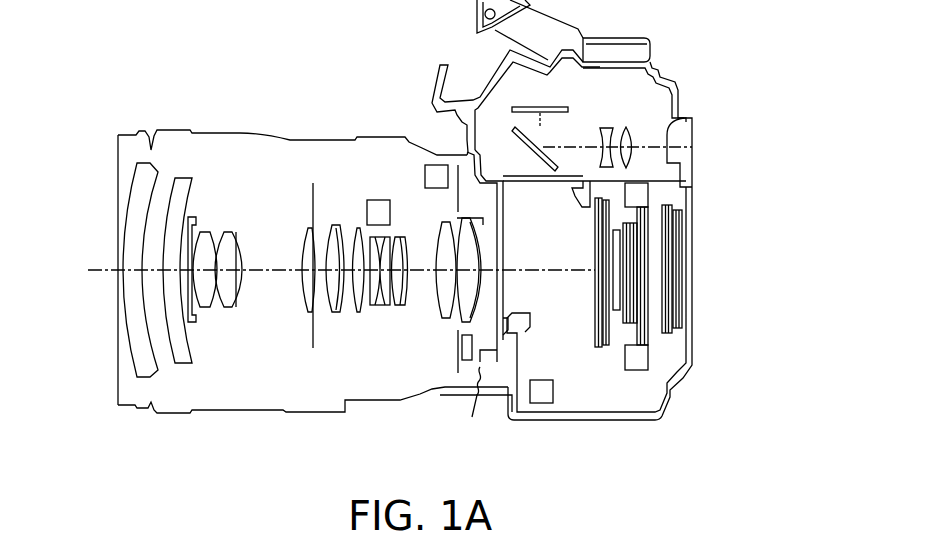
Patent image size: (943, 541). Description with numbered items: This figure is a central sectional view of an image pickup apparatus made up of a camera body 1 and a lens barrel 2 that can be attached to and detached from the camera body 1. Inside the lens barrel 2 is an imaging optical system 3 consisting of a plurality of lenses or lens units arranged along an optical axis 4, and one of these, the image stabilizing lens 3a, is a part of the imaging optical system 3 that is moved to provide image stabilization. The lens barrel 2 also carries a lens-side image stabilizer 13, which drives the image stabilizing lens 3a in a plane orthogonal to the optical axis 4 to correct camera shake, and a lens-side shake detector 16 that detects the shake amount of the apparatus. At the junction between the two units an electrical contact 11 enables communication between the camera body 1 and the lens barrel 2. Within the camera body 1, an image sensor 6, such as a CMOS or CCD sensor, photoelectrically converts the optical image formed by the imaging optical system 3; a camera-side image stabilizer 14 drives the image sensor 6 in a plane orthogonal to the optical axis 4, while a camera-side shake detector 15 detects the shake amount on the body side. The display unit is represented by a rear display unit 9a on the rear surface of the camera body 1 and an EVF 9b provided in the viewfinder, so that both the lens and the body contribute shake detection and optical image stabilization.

The camera body 1 is at (664, 56).
The lens barrel 2 is at (247, 130).
The imaging optical system 3 is at (303, 322).
The image stabilizing lens 3a is at (373, 318).
The optical axis 4 is at (93, 272).
The image sensor 6 is at (634, 292).
The rear display unit 9a is at (683, 300).
The EVF 9b is at (648, 131).
The electrical contact 11 is at (472, 408).
The lens-side image stabilizer 13 is at (378, 200).
The camera-side image stabilizer 14 is at (635, 366).
The camera-side shake detector 15 is at (543, 397).
The lens-side shake detector 16 is at (436, 175).